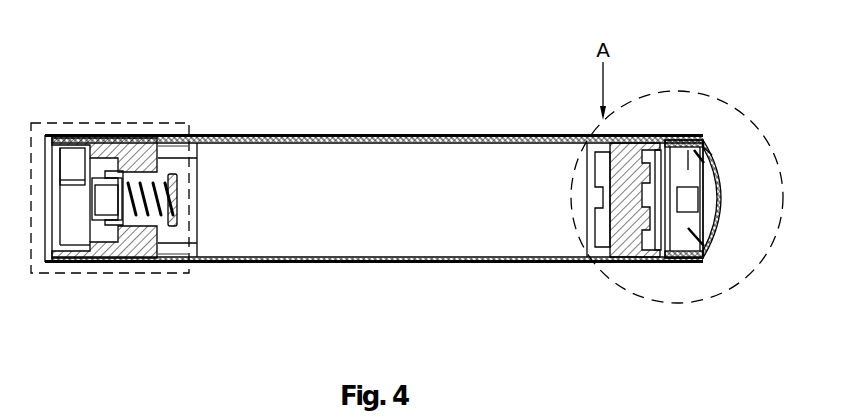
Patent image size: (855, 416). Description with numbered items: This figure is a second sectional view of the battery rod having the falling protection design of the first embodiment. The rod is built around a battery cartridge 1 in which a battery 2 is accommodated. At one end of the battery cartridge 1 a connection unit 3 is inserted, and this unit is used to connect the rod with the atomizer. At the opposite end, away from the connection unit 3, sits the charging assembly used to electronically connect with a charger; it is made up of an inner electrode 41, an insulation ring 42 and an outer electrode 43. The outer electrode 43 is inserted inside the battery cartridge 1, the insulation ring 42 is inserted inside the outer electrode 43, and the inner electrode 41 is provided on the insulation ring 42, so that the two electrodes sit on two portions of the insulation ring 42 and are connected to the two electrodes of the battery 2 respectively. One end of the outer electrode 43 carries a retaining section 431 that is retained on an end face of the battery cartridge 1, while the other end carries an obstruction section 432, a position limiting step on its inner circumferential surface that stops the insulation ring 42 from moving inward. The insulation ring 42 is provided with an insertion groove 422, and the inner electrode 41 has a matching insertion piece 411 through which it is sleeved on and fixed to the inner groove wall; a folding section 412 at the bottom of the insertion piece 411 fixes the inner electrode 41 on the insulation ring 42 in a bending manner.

The battery cartridge 1 is at (445, 266).
The battery 2 is at (521, 244).
The connection unit 3 is at (127, 276).
The inner electrode 41 is at (741, 242).
The insulation ring 42 is at (727, 242).
The outer electrode 43 is at (675, 266).
The insertion piece 411 is at (703, 138).
The folding section 412 is at (688, 158).
The insertion groove 422 is at (732, 106).
The retaining section 431 is at (703, 266).
The obstruction section 432 is at (642, 262).